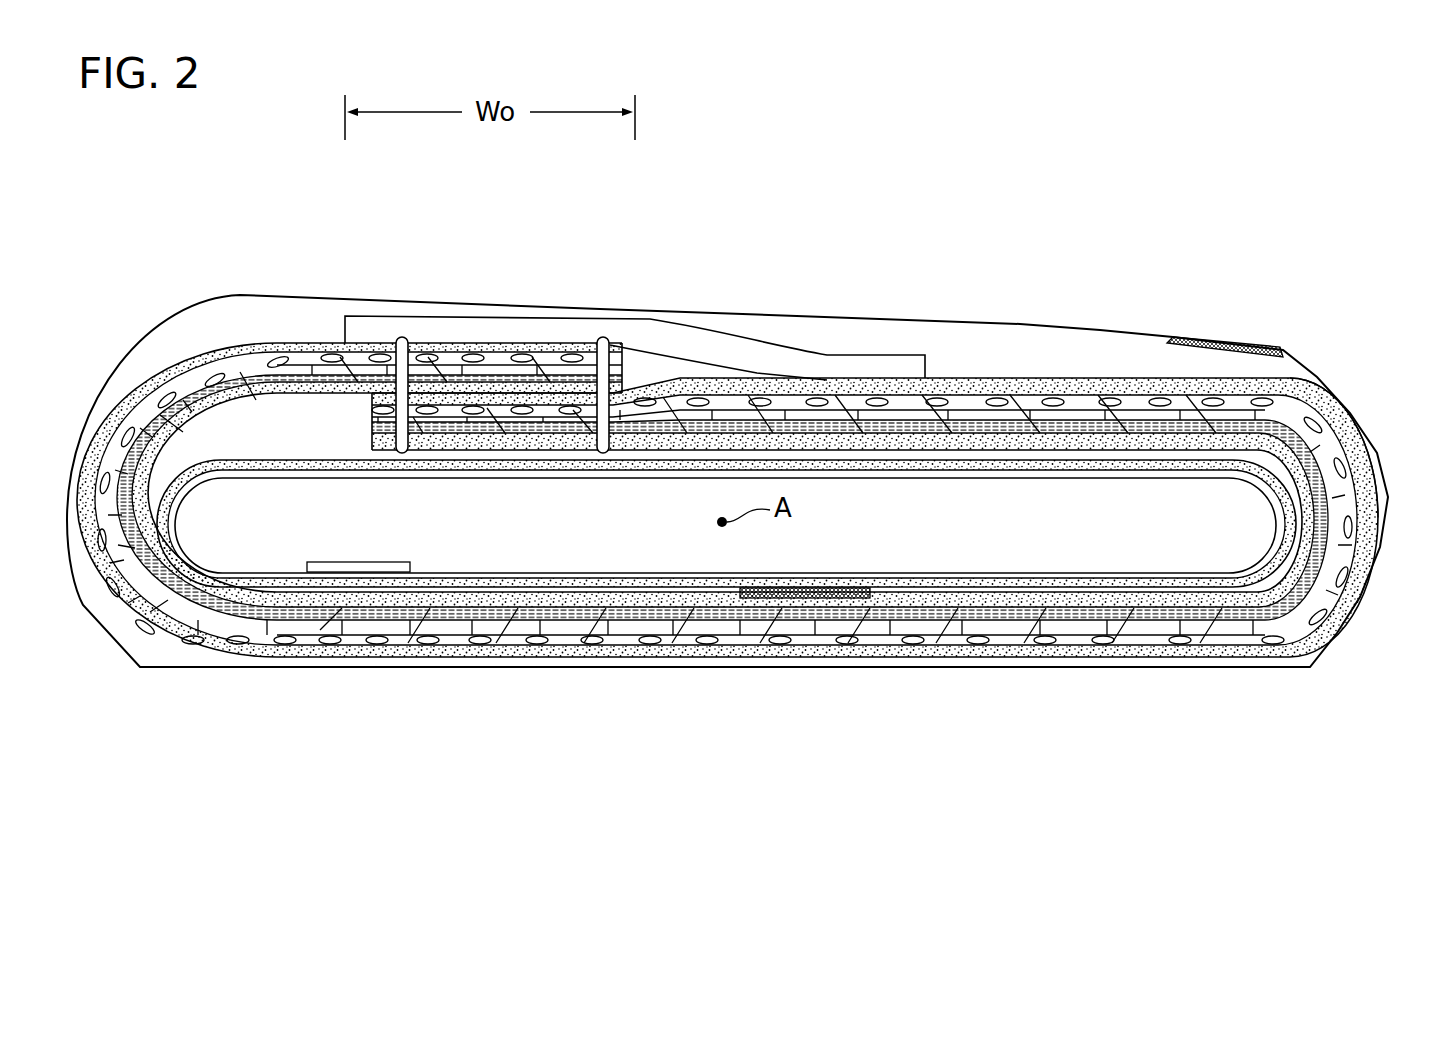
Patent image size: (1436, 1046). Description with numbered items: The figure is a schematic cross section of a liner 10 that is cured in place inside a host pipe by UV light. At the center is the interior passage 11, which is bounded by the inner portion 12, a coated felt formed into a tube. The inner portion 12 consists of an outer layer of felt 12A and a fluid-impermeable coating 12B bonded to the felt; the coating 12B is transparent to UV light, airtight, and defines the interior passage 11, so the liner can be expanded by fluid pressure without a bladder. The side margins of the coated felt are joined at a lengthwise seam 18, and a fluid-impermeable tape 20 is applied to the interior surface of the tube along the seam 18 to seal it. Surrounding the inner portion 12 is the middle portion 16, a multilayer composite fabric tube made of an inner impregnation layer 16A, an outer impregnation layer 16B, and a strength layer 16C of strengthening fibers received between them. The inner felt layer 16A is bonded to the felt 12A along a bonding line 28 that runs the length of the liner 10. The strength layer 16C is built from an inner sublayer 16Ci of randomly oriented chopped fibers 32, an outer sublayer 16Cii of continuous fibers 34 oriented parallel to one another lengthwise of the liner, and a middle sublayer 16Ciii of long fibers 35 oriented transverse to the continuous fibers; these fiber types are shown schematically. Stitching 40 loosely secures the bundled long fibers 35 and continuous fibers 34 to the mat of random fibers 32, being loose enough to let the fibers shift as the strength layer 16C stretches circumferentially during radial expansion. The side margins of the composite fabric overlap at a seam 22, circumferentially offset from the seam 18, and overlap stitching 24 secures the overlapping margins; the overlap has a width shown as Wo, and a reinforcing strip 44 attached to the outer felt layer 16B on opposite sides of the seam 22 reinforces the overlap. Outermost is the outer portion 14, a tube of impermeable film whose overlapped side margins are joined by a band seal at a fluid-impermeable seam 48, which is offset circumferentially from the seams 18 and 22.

The liner 10 is at (193, 782).
The interior passage 11 is at (480, 537).
The inner portion 12 is at (1120, 483).
The felt 12A is at (432, 600).
The fluid-impermeable coating 12B is at (212, 574).
The outer portion 14 is at (1030, 335).
The middle portion 16 is at (906, 452).
The inner impregnation layer 16A is at (1010, 452).
The outer impregnation layer 16B is at (1360, 452).
The strength layer 16C is at (1217, 645).
The inner sublayer 16Ci is at (1247, 610).
The outer sublayer 16Cii is at (1062, 632).
The middle sublayer 16Ciii is at (1143, 623).
The seam 18 is at (370, 587).
The fluid-impermeable tape 20 is at (372, 562).
The seam 22 is at (505, 387).
The overlap stitching 24 is at (606, 342).
The bonding line 28 is at (820, 598).
The chopped fibers 32 is at (590, 605).
The continuous fibers 34 is at (710, 643).
The long fibers 35 is at (567, 628).
The stitching 40 is at (333, 355).
The reinforcing strip 44 is at (753, 340).
The seam 48 is at (1238, 343).